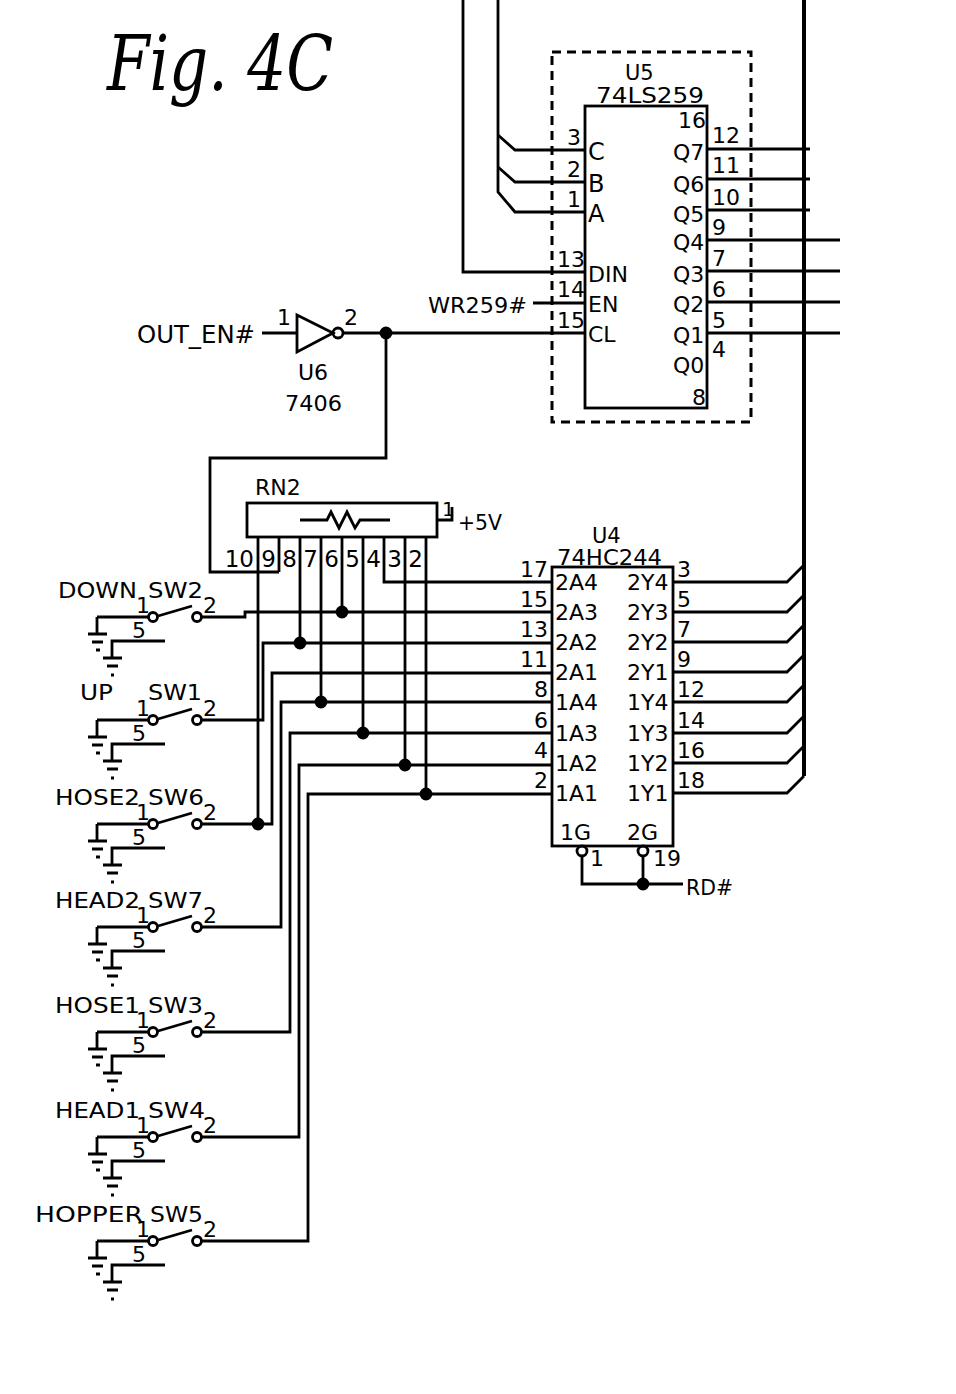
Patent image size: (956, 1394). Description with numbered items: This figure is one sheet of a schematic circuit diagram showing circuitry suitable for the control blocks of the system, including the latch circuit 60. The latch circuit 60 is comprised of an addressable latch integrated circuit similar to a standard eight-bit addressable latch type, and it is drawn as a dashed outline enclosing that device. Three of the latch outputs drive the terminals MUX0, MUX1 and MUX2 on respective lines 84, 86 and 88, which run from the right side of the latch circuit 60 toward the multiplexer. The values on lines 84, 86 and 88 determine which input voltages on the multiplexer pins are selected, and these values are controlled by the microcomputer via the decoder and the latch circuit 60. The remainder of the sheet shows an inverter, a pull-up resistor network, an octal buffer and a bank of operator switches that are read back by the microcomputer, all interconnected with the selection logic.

The latch circuit 60 is at (550, 373).
The line 84 is at (786, 210).
The line 86 is at (771, 179).
The line 88 is at (757, 147).